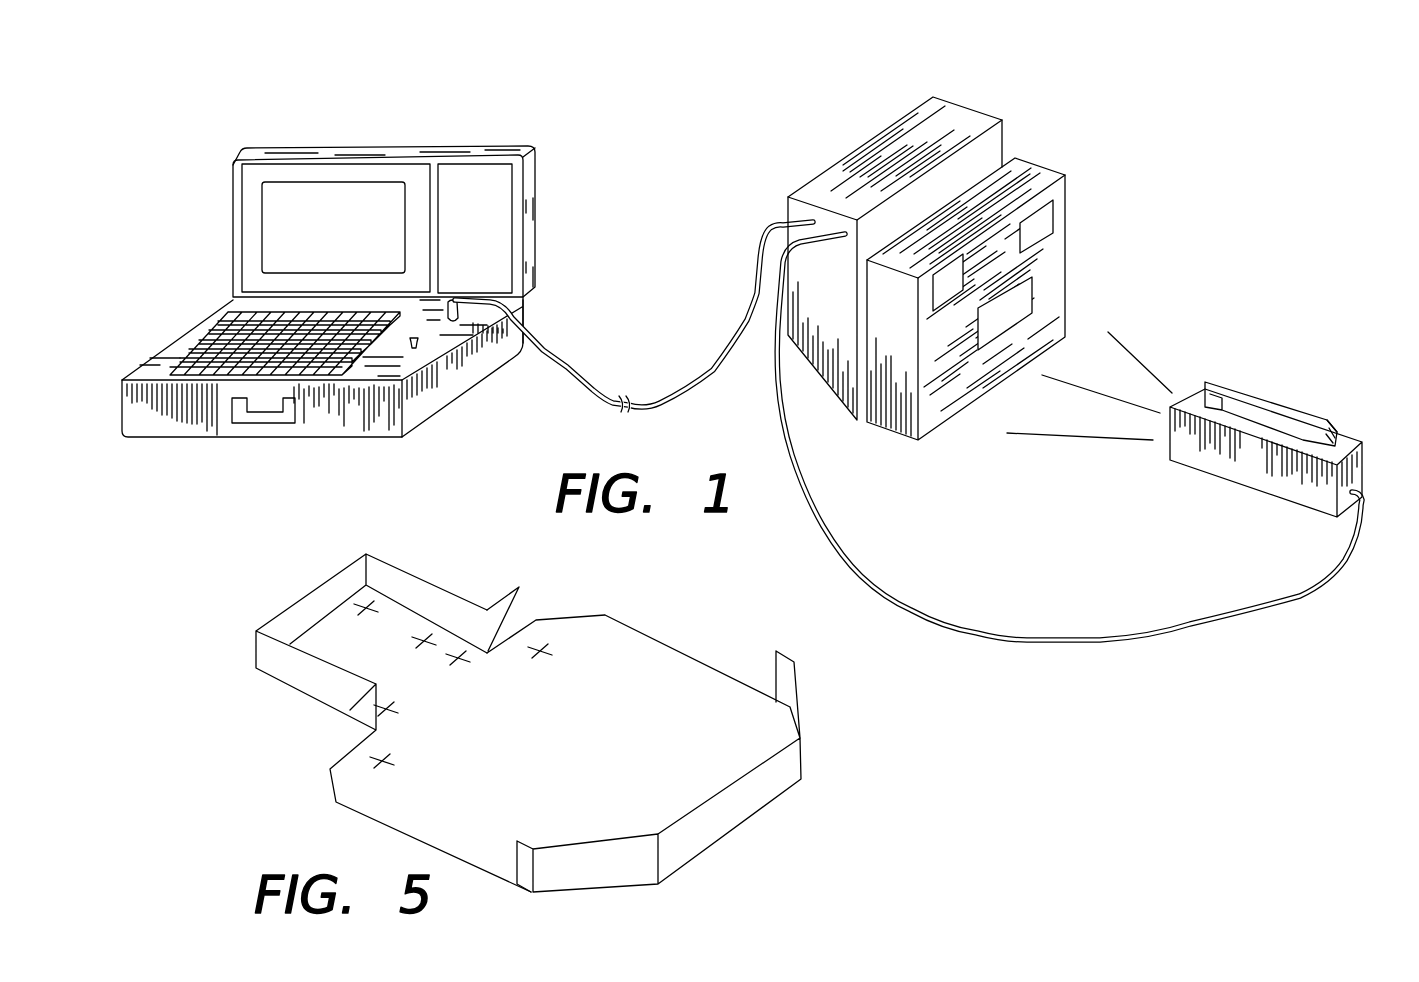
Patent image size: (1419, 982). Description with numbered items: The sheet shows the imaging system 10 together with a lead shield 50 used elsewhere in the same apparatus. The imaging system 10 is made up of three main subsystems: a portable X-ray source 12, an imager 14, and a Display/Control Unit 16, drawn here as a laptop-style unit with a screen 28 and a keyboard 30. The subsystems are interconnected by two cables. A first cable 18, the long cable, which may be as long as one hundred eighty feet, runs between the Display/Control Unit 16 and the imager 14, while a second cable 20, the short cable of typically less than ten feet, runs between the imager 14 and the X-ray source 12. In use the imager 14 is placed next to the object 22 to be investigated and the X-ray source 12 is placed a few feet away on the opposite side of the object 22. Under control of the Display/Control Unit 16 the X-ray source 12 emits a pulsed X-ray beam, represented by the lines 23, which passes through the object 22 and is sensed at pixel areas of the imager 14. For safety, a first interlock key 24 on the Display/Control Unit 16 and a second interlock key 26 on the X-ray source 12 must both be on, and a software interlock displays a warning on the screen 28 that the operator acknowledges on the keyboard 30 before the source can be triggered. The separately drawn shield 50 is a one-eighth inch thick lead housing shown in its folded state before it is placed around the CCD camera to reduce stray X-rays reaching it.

In FIG. 1, the imaging system 10 is at (194, 86).
In FIG. 1, the portable X-ray source 12 is at (1262, 450).
In FIG. 1, the imager 14 is at (876, 162).
In FIG. 1, the Display/Control Unit 16 is at (326, 285).
In FIG. 1, the first cable 18 is at (568, 362).
In FIG. 1, the second cable 20 is at (1023, 635).
In FIG. 1, the object 22 is at (1069, 253).
In FIG. 1, the lines 23 is at (1147, 367).
In FIG. 1, the first interlock key 24 is at (424, 348).
In FIG. 1, the second interlock key 26 is at (1342, 435).
In FIG. 1, the screen 28 is at (305, 218).
In FIG. 1, the keyboard 30 is at (227, 360).
In FIG. 5, the shield 50 is at (620, 621).